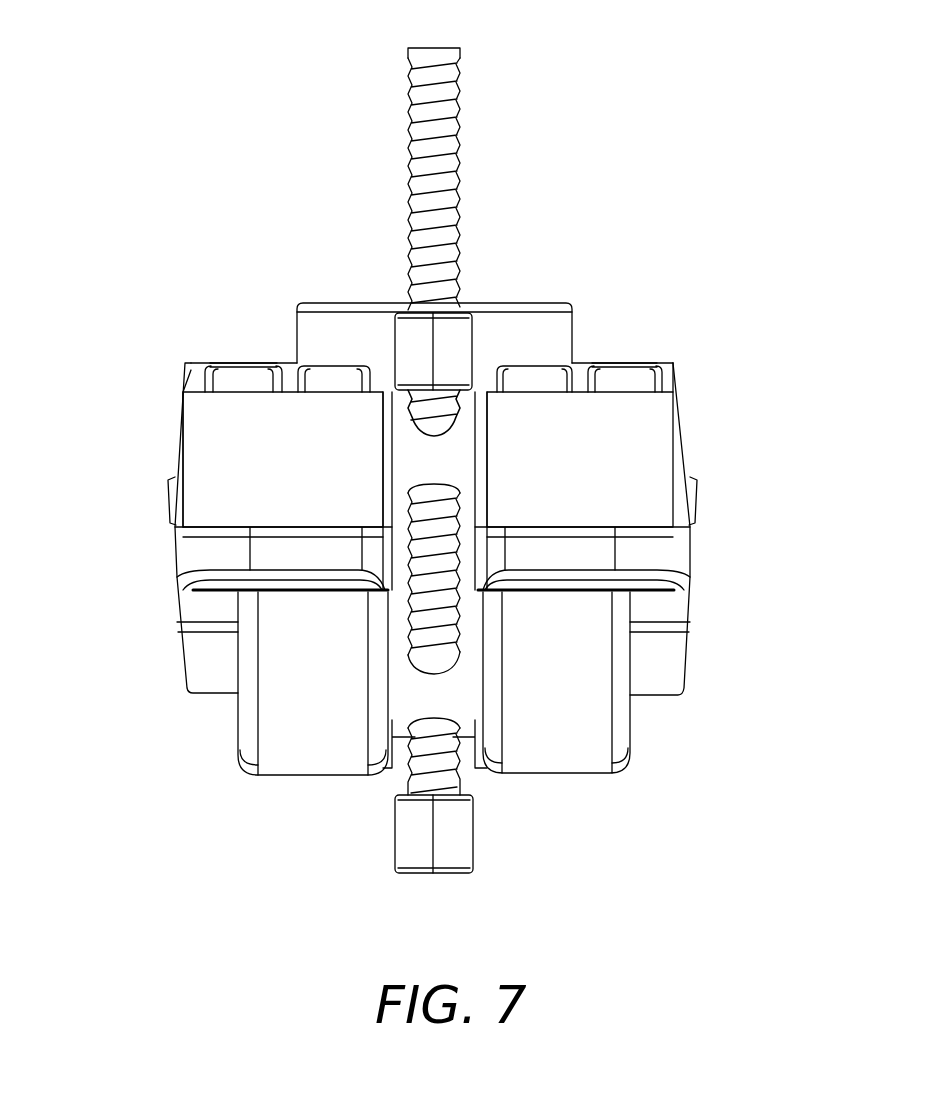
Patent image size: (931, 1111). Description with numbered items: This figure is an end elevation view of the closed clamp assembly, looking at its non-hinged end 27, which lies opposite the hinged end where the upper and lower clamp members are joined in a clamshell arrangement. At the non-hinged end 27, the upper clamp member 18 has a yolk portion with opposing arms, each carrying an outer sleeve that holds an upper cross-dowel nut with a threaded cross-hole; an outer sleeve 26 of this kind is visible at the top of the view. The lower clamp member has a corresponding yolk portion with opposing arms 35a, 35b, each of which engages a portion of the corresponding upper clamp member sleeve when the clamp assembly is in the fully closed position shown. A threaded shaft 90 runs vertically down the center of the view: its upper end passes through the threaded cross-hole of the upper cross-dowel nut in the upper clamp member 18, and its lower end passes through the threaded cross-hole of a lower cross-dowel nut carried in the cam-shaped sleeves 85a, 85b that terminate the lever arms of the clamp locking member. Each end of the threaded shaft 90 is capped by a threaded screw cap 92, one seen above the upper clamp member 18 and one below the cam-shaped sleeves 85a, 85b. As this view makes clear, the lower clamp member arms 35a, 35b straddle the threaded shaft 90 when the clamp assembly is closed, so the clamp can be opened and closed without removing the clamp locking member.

The non-hinged end 27 is at (200, 246).
The outer sleeve 26 is at (458, 92).
The upper clamp member 18 is at (243, 393).
The threaded screw cap 92 is at (410, 333).
The threaded shaft 90 is at (448, 408).
The opposing arm of lower clamp member yolk portion 35a is at (193, 557).
The opposing arm of lower clamp member yolk portion 35b is at (675, 557).
The cam-shaped sleeve 85a is at (297, 663).
The cam-shaped sleeve 85b is at (573, 662).